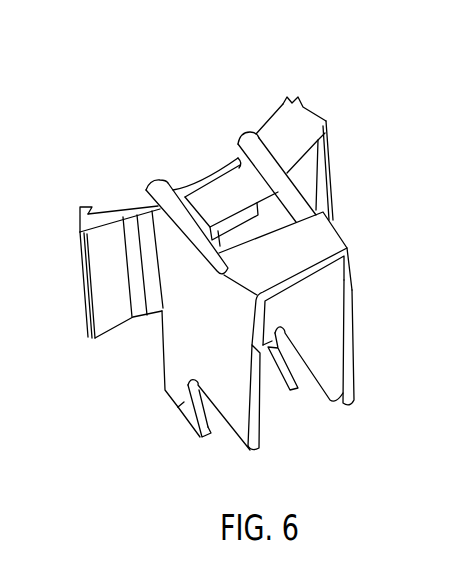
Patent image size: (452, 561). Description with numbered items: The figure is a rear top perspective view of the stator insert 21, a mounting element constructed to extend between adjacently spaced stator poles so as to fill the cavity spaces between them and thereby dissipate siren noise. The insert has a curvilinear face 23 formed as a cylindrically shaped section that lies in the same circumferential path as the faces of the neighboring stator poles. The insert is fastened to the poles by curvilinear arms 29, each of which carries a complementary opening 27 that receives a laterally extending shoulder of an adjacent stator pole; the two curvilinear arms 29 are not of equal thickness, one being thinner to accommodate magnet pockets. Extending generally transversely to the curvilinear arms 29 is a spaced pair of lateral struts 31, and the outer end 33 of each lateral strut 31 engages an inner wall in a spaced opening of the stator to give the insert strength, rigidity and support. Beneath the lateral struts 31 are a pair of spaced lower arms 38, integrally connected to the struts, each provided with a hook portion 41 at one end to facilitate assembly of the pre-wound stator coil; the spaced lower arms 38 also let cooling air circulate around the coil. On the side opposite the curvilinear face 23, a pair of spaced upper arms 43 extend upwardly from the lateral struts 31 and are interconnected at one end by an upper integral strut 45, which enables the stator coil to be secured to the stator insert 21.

The stator insert 21 is at (197, 116).
The curvilinear face 23 is at (197, 178).
The openings 27 is at (82, 218).
The curvilinear arms 29 is at (100, 213).
The lateral struts 31 is at (202, 320).
The outer end 33 is at (263, 412).
The lower arms 38 is at (183, 403).
The hook portion 41 is at (209, 430).
The upper arms 43 is at (187, 249).
The upper integral strut 45 is at (303, 250).